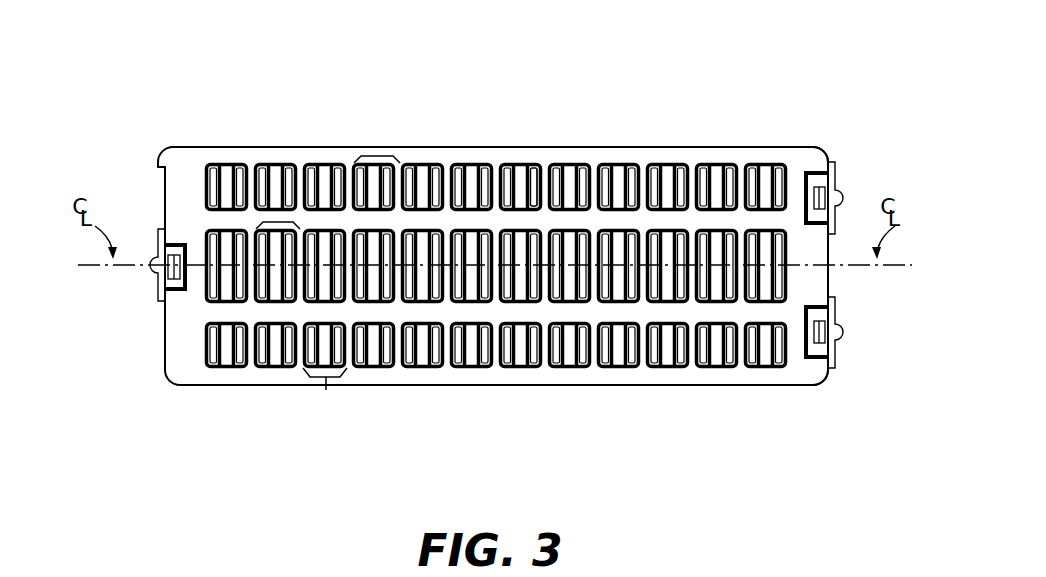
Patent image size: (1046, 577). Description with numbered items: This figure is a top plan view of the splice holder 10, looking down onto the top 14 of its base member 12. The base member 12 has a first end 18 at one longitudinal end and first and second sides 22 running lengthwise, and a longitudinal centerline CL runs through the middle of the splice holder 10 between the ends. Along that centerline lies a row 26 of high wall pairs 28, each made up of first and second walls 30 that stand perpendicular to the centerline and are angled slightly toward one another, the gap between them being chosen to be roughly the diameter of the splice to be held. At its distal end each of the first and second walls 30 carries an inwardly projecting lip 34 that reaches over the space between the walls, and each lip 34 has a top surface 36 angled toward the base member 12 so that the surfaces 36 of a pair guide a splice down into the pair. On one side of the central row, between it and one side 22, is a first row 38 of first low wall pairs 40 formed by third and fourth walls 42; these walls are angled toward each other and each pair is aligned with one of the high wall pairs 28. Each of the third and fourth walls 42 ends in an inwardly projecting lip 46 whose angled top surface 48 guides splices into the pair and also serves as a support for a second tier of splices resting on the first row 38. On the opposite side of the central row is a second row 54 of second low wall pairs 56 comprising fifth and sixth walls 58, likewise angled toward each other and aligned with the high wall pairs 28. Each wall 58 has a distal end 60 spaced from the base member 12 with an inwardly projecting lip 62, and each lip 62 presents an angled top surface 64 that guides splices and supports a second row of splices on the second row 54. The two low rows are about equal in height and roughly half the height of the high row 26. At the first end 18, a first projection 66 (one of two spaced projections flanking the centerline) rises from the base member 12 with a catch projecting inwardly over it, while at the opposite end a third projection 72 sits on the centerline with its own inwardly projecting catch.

The splice holder 10 is at (826, 385).
The base member 12 is at (194, 385).
The top 14 is at (190, 158).
The first end 18 is at (165, 336).
The first and second sides 22 is at (563, 148).
The row of high wall pairs 26 is at (818, 248).
The high wall pair 28 is at (278, 222).
The first and second walls 30 is at (205, 292).
The inwardly projecting lip 34 is at (588, 232).
The top surface 36 is at (680, 232).
The first row of first low wall pairs 38 is at (808, 368).
The first low wall pair 40 is at (326, 397).
The third and fourth walls 42 is at (597, 353).
The inwardly projecting lip 46 is at (630, 355).
The top surface 48 is at (435, 355).
The second row of second low wall pairs 54 is at (799, 160).
The second low wall pair 56 is at (378, 156).
The fifth and sixth walls 58 is at (205, 184).
The distal end 60 is at (405, 167).
The inwardly projecting lip 62 is at (513, 167).
The top surface 64 is at (533, 167).
The first projection 66 is at (836, 172).
The third projection 72 is at (157, 282).